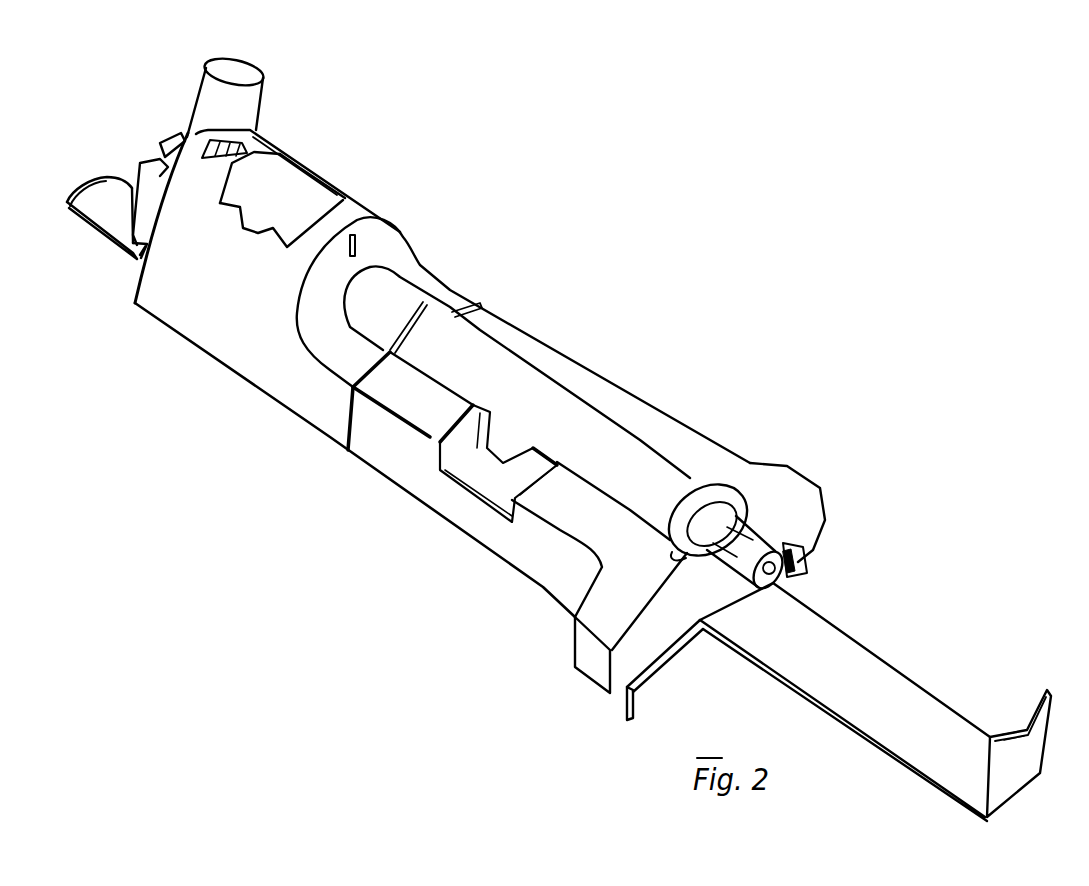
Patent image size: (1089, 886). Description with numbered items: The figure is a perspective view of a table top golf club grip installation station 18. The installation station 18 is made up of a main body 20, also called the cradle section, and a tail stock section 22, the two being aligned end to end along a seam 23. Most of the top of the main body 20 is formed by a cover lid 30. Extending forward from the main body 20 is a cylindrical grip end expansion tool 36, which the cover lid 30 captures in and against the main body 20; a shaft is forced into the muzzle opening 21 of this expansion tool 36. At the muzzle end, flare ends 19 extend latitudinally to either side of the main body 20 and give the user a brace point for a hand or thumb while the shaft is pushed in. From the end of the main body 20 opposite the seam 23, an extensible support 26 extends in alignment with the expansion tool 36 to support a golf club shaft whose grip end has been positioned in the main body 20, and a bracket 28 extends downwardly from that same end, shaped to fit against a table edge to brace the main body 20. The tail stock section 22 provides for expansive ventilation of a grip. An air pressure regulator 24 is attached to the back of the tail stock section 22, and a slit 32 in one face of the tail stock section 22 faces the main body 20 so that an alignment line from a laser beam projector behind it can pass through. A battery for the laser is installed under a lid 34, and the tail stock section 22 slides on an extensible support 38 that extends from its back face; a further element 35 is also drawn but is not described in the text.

The table top golf club grip installation station 18 is at (785, 326).
The flare ends 19 is at (813, 513).
The main body 20 is at (484, 542).
The muzzle opening 21 is at (793, 550).
The tail stock section 22 is at (400, 230).
The seam 23 is at (348, 455).
The air pressure regulator 24 is at (264, 80).
The extensible support 26 is at (990, 822).
The bracket 28 is at (624, 727).
The cover lid 30 is at (676, 447).
The slit 32 is at (356, 245).
The lid 34 is at (274, 230).
The vent grille 35 is at (255, 137).
The cylindrical grip end expansion tool 36 is at (780, 583).
The extensible support 38 is at (88, 221).